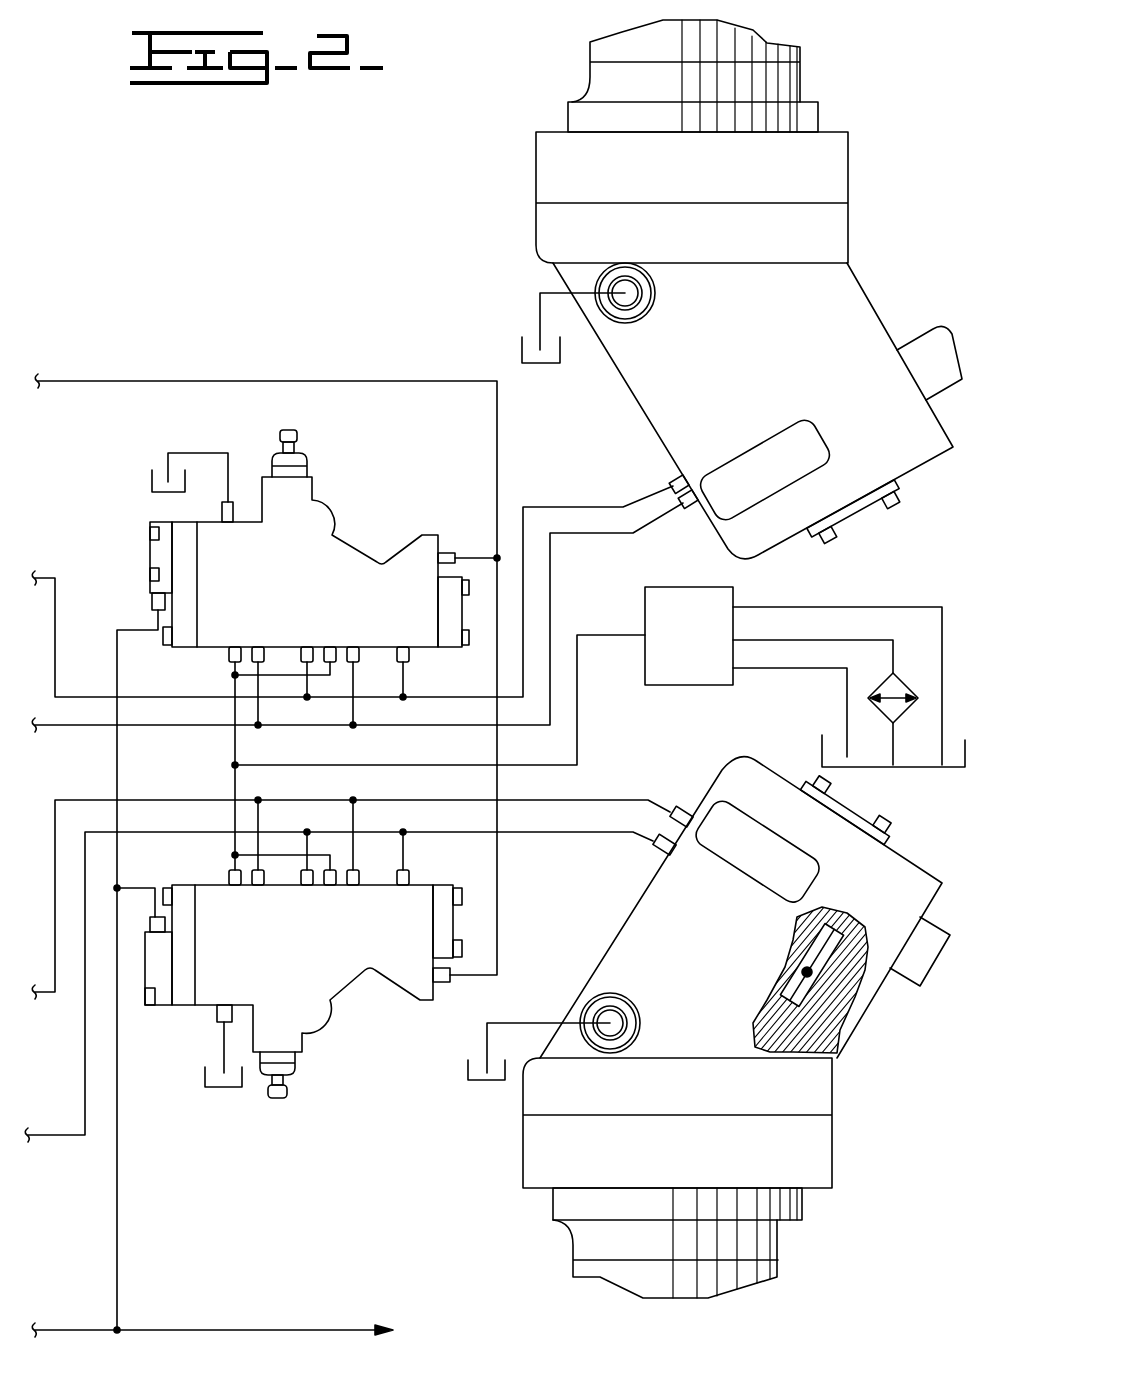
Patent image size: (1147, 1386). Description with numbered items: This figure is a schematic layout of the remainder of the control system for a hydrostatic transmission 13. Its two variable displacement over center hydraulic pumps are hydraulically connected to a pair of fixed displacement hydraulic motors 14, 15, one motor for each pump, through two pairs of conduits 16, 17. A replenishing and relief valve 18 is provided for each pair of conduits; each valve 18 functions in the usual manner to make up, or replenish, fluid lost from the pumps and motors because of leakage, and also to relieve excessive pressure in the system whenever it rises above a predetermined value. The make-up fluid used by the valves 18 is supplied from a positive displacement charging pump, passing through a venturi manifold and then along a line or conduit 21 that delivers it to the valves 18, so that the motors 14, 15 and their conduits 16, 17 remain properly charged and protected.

The hydrostatic transmission 13 is at (168, 228).
The fixed displacement hydraulic motor 14 is at (757, 377).
The fixed displacement hydraulic motor 15 is at (724, 959).
The conduits 16 is at (80, 726).
The conduits 17 is at (56, 600).
The replenishing and relief valve 18 is at (292, 604).
The line or conduit 21 is at (186, 380).